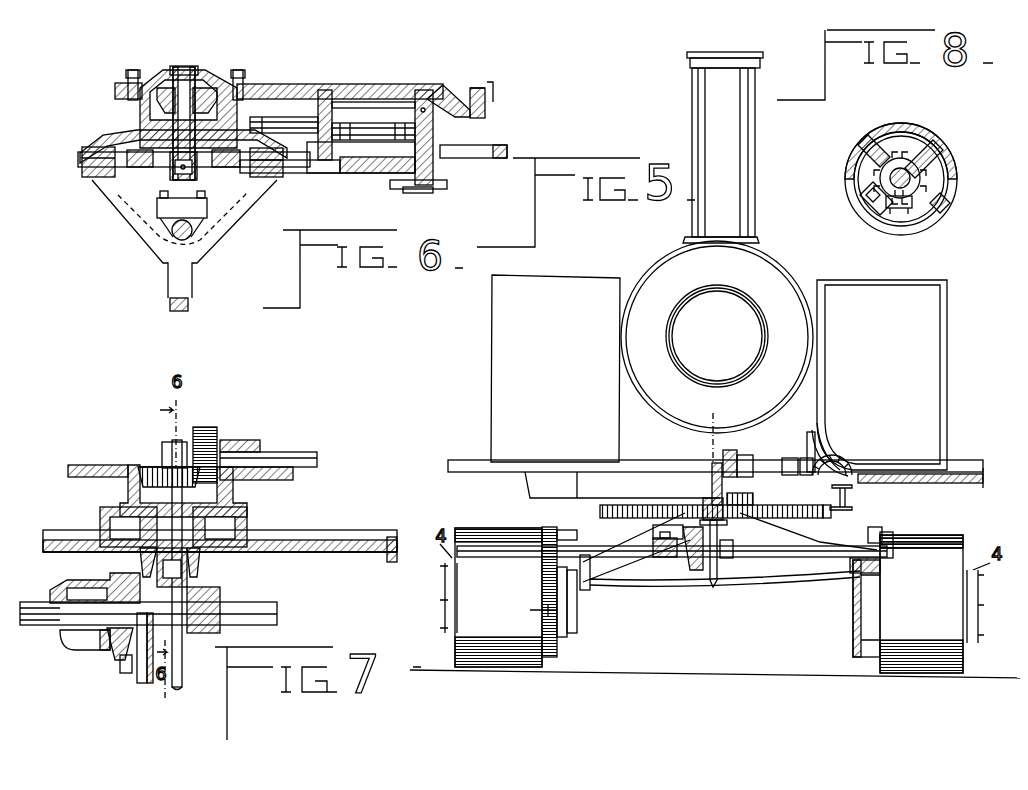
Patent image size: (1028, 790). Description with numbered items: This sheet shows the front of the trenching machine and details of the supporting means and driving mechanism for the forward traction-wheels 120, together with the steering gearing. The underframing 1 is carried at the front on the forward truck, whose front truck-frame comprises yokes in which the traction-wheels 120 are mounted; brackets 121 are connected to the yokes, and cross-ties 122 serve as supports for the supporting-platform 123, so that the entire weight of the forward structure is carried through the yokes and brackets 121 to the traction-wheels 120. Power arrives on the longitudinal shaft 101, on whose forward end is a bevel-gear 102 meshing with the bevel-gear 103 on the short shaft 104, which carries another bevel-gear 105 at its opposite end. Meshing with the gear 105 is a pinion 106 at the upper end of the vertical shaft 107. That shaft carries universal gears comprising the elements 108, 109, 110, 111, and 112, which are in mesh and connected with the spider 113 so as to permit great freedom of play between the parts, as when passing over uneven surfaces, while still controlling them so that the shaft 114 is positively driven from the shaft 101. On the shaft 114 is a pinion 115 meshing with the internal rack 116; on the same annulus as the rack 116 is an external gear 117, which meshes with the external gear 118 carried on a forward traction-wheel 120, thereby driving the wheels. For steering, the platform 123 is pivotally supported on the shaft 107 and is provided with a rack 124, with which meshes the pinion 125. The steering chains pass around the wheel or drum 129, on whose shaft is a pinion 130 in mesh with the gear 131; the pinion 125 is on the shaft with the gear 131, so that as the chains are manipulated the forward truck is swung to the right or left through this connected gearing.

In FIG. 5, the underframing 1 is at (850, 503).
In FIG. 5, the shaft 101 is at (847, 458).
In FIG. 5, the bevel-gear 102 is at (838, 450).
In FIG. 5, the bevel-gear 103 is at (822, 452).
In FIG. 5, the short shaft 104 is at (770, 467).
In FIG. 7, the short shaft 104 is at (291, 460).
In FIG. 5, the bevel-gear 105 is at (733, 463).
In FIG. 7, the bevel-gear 105 is at (205, 428).
In FIG. 6, the pinion 106 is at (215, 97).
In FIG. 7, the pinion 106 is at (149, 470).
In FIG. 6, the vertical shaft 107 is at (185, 92).
In FIG. 8, the vertical shaft 107 is at (857, 174).
In FIG. 7, the vertical shaft 107 is at (234, 503).
In FIG. 6, the universal gear element 108 is at (208, 183).
In FIG. 8, the universal gear element 108 is at (902, 208).
In FIG. 7, the universal gear element 108 is at (200, 558).
In FIG. 5, the universal gear element 109 is at (653, 530).
In FIG. 7, the universal gear element 109 is at (120, 563).
In FIG. 5, the universal gear element 110 is at (673, 560).
In FIG. 7, the universal gear element 110 is at (103, 642).
In FIG. 5, the universal gear element 111 is at (687, 568).
In FIG. 7, the universal gear element 111 is at (122, 665).
In FIG. 5, the universal gear element 112 is at (722, 563).
In FIG. 7, the universal gear element 112 is at (142, 675).
In FIG. 6, the spider 113 is at (113, 133).
In FIG. 8, the spider 113 is at (882, 127).
In FIG. 7, the spider 113 is at (97, 517).
In FIG. 6, the shaft 114 is at (194, 242).
In FIG. 5, the shaft 114 is at (768, 559).
In FIG. 7, the shaft 114 is at (277, 610).
In FIG. 5, the pinion 115 is at (880, 559).
In FIG. 5, the internal rack 116 is at (888, 538).
In FIG. 5, the external gear 117 is at (553, 530).
In FIG. 5, the external gear 118 is at (542, 570).
In FIG. 5, the forward traction-wheel 120 is at (709, 600).
In FIG. 5, the bracket 121 is at (573, 613).
In FIG. 6, the cross-tie 122 is at (132, 213).
In FIG. 5, the cross-tie 122 is at (753, 583).
In FIG. 6, the supporting-platform 123 is at (380, 173).
In FIG. 5, the supporting-platform 123 is at (767, 518).
In FIG. 7, the supporting-platform 123 is at (368, 534).
In FIG. 6, the rack 124 is at (413, 182).
In FIG. 5, the rack 124 is at (825, 515).
In FIG. 7, the rack 124 is at (393, 562).
In FIG. 6, the pinion 125 is at (442, 188).
In FIG. 5, the pinion 125 is at (707, 512).
In FIG. 6, the wheel or drum 129 is at (355, 128).
In FIG. 5, the wheel or drum 129 is at (835, 478).
In FIG. 6, the pinion 130 is at (338, 158).
In FIG. 6, the gear 131 is at (467, 158).
In FIG. 5, the gear 131 is at (710, 483).